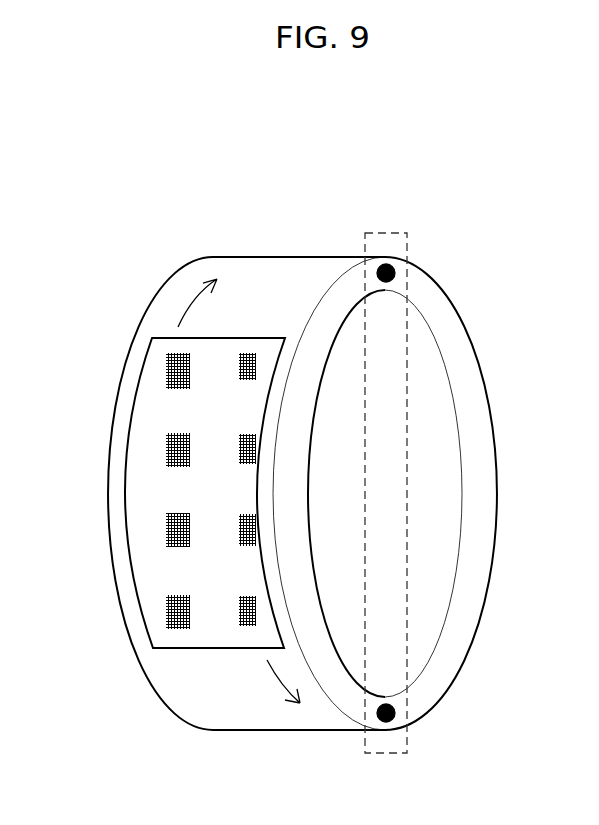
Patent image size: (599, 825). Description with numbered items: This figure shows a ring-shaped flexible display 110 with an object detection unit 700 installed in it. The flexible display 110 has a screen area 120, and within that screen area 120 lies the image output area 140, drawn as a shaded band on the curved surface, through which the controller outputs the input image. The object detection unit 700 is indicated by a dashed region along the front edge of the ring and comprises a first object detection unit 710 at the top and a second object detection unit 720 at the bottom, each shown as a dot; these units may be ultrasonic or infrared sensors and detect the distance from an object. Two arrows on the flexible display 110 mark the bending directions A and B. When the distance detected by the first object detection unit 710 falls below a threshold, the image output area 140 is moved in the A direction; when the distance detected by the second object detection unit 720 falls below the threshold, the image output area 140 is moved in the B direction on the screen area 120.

The flexible display 110 is at (155, 232).
The screen area 120 is at (297, 280).
The image output area 140 is at (145, 390).
The object detection unit 700 is at (407, 452).
The first object detection unit 710 is at (397, 277).
The second object detection unit 720 is at (397, 710).